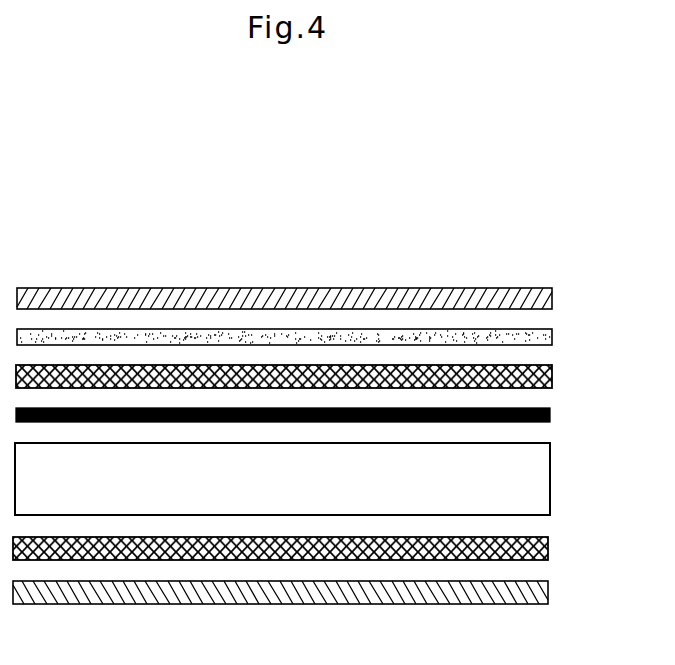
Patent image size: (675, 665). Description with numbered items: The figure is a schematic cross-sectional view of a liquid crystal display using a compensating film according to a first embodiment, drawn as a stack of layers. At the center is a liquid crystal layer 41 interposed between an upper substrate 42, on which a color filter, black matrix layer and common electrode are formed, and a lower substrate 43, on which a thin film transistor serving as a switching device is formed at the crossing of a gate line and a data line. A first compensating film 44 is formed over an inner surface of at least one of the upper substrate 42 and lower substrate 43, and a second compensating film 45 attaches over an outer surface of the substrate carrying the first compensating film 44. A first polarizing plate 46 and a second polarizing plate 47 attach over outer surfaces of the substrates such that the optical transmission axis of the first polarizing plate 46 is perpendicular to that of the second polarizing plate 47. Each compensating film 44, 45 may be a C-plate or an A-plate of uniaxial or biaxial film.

The liquid crystal layer 41 is at (550, 479).
The upper substrate 42 is at (552, 374).
The lower substrate 43 is at (548, 546).
The first compensating film 44 is at (550, 413).
The second compensating film 45 is at (552, 335).
The first polarizing plate 46 is at (552, 296).
The second polarizing plate 47 is at (548, 589).